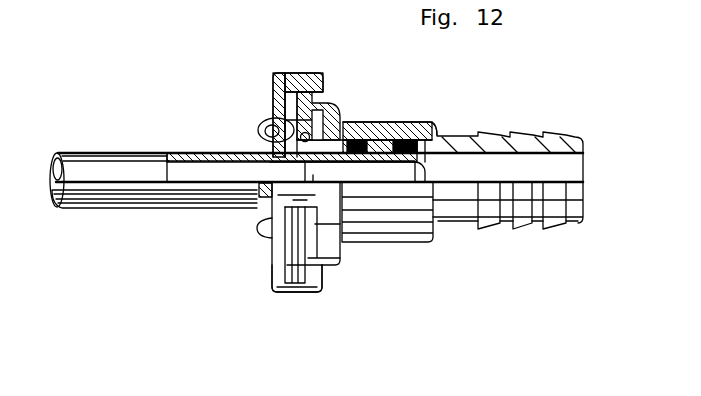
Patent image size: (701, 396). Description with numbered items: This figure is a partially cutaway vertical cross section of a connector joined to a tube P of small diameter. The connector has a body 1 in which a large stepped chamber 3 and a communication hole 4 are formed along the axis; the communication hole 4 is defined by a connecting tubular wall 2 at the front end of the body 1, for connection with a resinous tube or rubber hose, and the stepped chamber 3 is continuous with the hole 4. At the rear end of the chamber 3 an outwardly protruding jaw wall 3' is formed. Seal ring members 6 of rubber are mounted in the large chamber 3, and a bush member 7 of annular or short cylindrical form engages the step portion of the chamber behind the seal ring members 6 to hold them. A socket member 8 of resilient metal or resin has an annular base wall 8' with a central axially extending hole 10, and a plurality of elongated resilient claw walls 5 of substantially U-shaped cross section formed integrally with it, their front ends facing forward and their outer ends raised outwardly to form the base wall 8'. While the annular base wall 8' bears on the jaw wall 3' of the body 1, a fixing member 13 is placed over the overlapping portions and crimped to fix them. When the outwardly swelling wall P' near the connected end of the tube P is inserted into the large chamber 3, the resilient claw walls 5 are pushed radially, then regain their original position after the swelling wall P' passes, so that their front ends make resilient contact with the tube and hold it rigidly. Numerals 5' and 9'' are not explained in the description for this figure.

The body 1 is at (412, 228).
The connecting tubular wall 2 is at (487, 217).
The large stepped chamber 3 is at (353, 207).
The jaw wall 3' is at (298, 95).
The communication hole 4 is at (518, 168).
The resilient claw wall 5 is at (244, 188).
The lower valve stem 5' is at (295, 277).
The seal ring member 6 is at (372, 130).
The bush member 7 is at (341, 121).
The socket member 8 is at (240, 117).
The annular base wall 8' is at (263, 67).
The valve stem 9'' is at (316, 95).
The hole 10 is at (272, 103).
The fixing member 13 is at (277, 270).
The tube P is at (316, 207).
The annular swelling wall P' is at (292, 97).